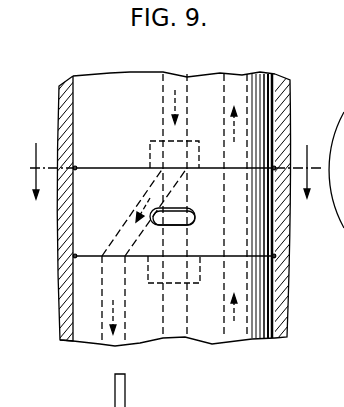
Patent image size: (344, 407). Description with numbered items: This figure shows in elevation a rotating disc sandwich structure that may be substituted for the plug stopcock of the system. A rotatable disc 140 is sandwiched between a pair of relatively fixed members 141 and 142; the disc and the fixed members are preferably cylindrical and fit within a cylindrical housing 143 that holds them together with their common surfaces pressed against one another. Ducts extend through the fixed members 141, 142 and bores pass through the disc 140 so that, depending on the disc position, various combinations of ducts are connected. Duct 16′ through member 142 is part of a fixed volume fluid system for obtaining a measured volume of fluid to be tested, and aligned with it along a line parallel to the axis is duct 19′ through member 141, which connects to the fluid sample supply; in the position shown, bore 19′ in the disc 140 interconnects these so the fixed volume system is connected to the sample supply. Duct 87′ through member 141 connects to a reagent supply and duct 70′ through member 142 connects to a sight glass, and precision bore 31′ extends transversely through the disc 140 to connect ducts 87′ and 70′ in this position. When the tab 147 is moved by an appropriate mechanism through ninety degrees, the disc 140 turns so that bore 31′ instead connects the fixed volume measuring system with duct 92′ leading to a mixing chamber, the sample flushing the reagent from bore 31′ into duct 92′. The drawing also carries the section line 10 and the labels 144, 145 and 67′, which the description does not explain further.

The section line 10- 10 is at (186, 170).
The rotatable disc 140 is at (80, 195).
The fixed member 141 is at (80, 296).
The fixed member 142 is at (108, 82).
The cylindrical housing 143 is at (289, 107).
The upper recess 144 is at (150, 156).
The lower recess 145 is at (148, 280).
The tab 147 is at (190, 221).
The duct 16′ is at (243, 75).
The duct 19′ is at (222, 186).
The precision bore 31′ is at (123, 227).
The duct 70′ is at (163, 118).
The duct 87′ is at (103, 346).
The duct 92′ is at (187, 327).
The passage 67′ is at (246, 328).